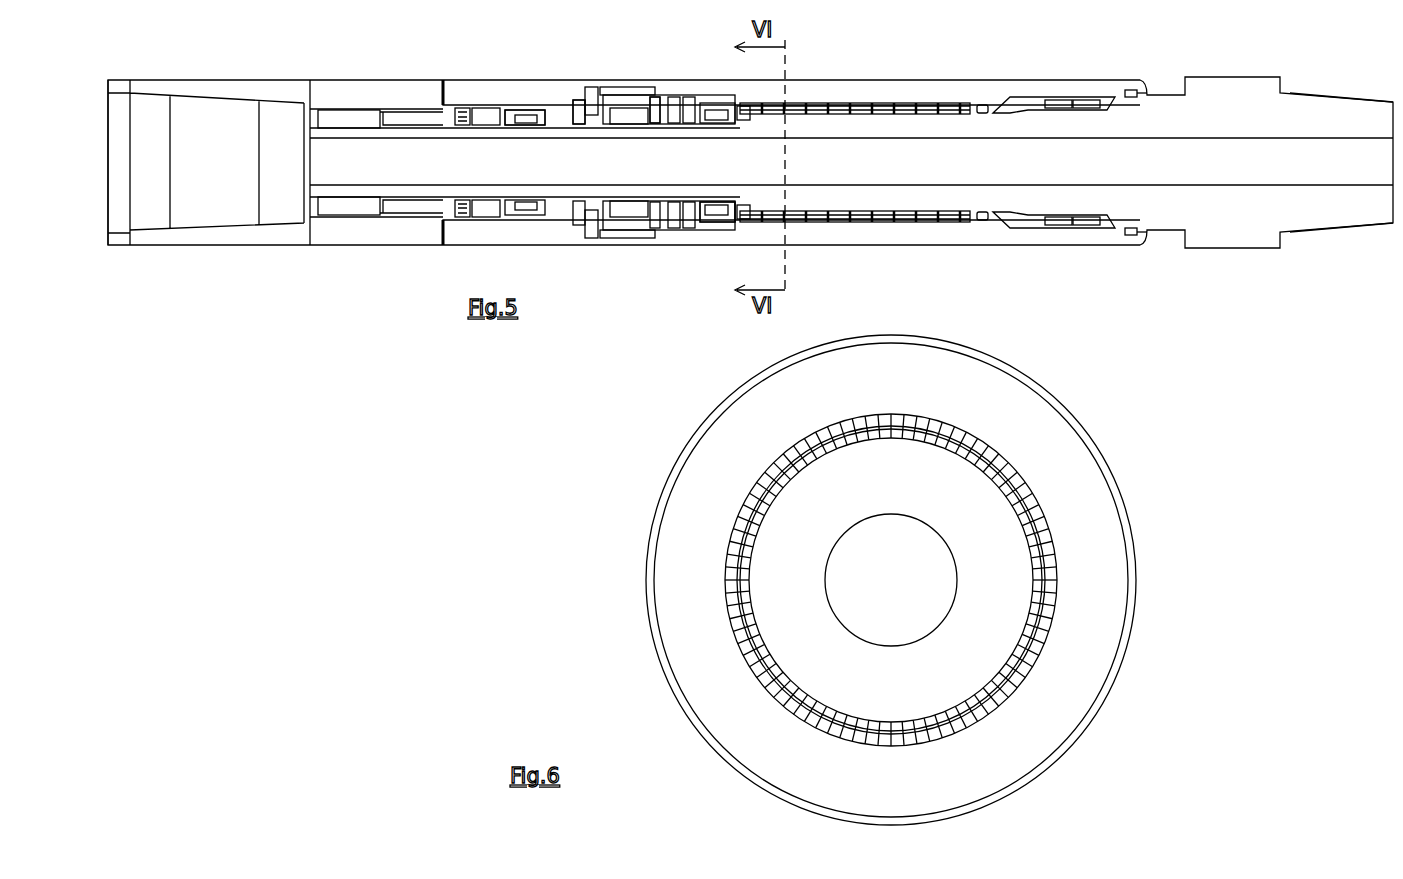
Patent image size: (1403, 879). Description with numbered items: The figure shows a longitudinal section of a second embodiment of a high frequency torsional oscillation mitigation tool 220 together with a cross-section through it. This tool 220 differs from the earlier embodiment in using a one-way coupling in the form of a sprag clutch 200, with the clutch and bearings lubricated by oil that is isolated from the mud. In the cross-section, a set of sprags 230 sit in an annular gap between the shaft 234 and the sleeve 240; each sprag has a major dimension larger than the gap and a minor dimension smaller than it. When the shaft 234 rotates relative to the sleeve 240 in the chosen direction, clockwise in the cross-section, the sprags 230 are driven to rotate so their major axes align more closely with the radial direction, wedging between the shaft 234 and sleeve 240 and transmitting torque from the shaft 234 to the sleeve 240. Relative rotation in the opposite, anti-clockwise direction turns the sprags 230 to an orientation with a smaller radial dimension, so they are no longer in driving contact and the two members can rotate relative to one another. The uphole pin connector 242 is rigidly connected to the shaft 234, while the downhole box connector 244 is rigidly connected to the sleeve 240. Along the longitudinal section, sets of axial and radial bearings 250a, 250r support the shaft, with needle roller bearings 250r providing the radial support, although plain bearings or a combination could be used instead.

In FIG. 6, the sprag clutch 200 is at (597, 560).
In FIG. 5, the high frequency torsional oscillation mitigation tool 220 is at (343, 310).
In FIG. 6, the sprags 230 is at (923, 722).
In FIG. 5, the shaft 234 is at (940, 200).
In FIG. 6, the shaft 234 is at (985, 518).
In FIG. 5, the sleeve 240 is at (869, 95).
In FIG. 6, the sleeve 240 is at (705, 478).
In FIG. 5, the uphole pin connector 242 is at (1351, 232).
In FIG. 5, the downhole box connector 244 is at (152, 222).
In FIG. 5, the axial bearings 250a is at (566, 86).
In FIG. 5, the needle roller bearings 250r is at (526, 96).